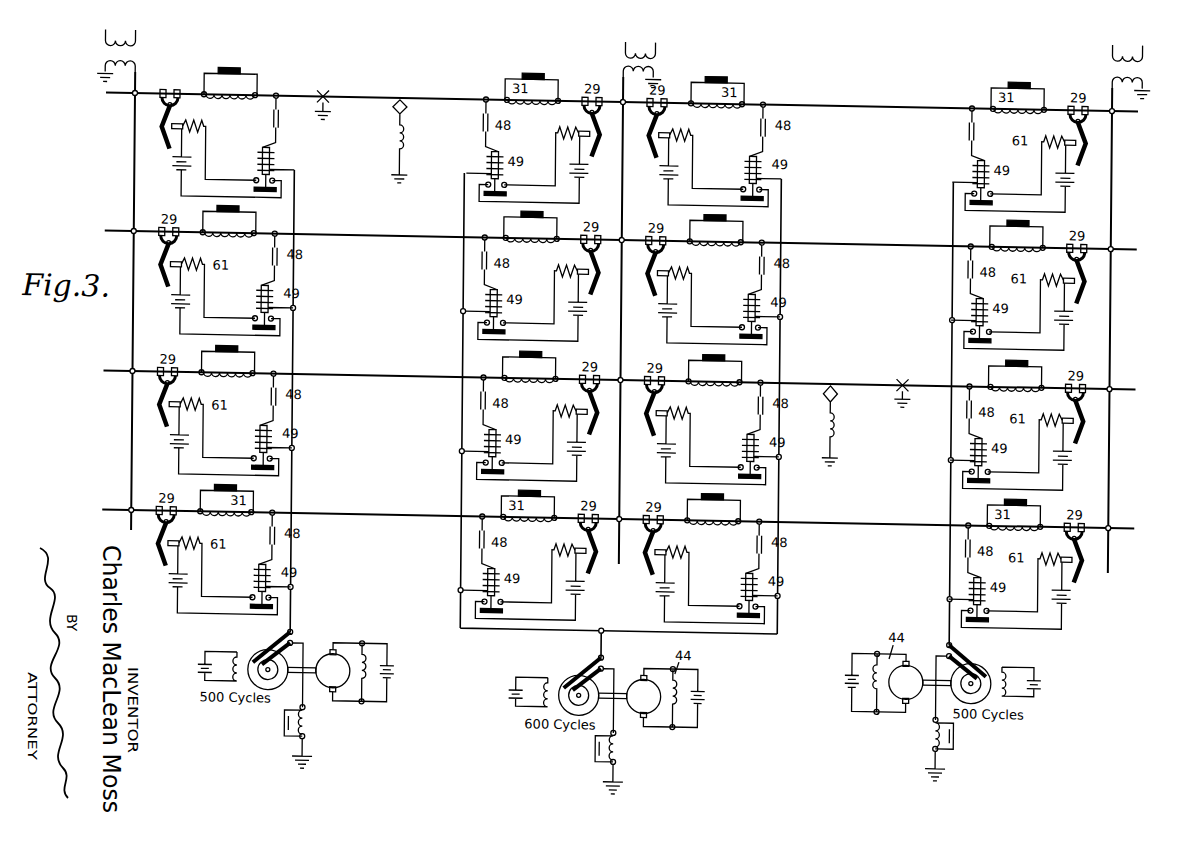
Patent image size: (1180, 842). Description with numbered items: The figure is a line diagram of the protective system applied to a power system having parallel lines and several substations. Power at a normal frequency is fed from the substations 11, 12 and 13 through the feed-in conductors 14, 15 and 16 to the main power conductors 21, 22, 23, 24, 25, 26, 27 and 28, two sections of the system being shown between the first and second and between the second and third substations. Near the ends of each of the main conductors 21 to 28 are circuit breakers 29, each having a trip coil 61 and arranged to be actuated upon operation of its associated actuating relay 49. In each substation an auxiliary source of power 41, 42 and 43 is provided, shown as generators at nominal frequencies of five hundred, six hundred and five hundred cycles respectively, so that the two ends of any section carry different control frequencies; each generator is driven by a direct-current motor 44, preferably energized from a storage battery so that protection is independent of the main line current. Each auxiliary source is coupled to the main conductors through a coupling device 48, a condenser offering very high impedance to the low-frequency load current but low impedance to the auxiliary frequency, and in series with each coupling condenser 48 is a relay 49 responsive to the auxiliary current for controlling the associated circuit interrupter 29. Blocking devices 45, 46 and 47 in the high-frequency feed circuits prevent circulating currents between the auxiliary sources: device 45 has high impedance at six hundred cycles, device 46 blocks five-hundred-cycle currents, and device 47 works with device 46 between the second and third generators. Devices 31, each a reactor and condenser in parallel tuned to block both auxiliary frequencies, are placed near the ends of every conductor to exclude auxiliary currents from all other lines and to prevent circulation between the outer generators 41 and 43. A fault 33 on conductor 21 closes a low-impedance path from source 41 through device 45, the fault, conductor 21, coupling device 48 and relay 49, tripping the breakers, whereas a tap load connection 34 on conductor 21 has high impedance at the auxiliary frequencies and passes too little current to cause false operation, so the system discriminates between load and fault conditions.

The substation 11 is at (125, 28).
The substation 12 is at (646, 30).
The substation 13 is at (1134, 34).
The feed-in conductor 14 is at (133, 80).
The feed-in conductor 15 is at (626, 80).
The feed-in conductor 16 is at (1150, 77).
The main power conductor 21 is at (380, 93).
The main power conductor 22 is at (369, 231).
The main power conductor 23 is at (364, 371).
The main power conductor 24 is at (359, 510).
The main power conductor 25 is at (884, 93).
The main power conductor 26 is at (874, 231).
The main power conductor 27 is at (874, 371).
The main power conductor 28 is at (874, 510).
The circuit breaker 29 is at (170, 110).
The blocking device 31 is at (229, 83).
The fault connection 33 is at (328, 106).
The tap load connection 34 is at (405, 136).
The auxiliary source of power 41 is at (256, 658).
The auxiliary source of power 42 is at (568, 675).
The auxiliary source of power 43 is at (990, 655).
The motor 44 is at (348, 644).
The blocking device 45 is at (287, 738).
The blocking device 46 is at (598, 758).
The blocking device 47 is at (956, 740).
The coupling device 48 is at (280, 110).
The actuating relay 49 is at (272, 150).
The trip coil 61 is at (206, 125).